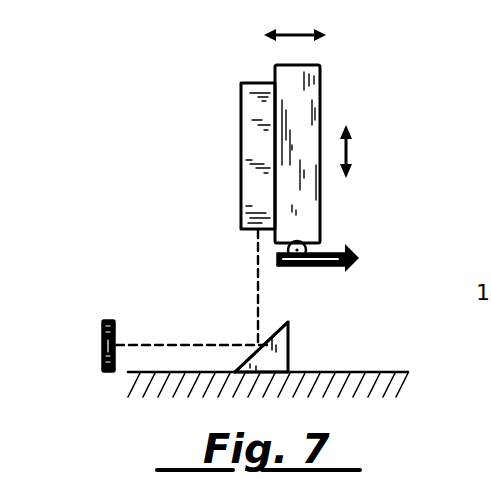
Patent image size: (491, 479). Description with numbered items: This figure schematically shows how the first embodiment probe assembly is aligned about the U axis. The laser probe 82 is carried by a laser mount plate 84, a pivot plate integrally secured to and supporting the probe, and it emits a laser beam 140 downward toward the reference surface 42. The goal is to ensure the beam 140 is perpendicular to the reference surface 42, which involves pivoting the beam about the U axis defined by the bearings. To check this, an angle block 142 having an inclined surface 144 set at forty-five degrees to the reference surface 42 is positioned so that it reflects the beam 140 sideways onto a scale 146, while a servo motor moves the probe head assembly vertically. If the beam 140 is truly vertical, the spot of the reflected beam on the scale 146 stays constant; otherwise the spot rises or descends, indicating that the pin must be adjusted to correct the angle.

The reference surface 42 is at (367, 372).
The laser probe 82 is at (256, 142).
The laser mount plate 84 is at (295, 98).
The laser beam 140 is at (258, 286).
The angle block 142 is at (289, 357).
The inclined surface 144 is at (272, 333).
The scale 146 is at (100, 342).